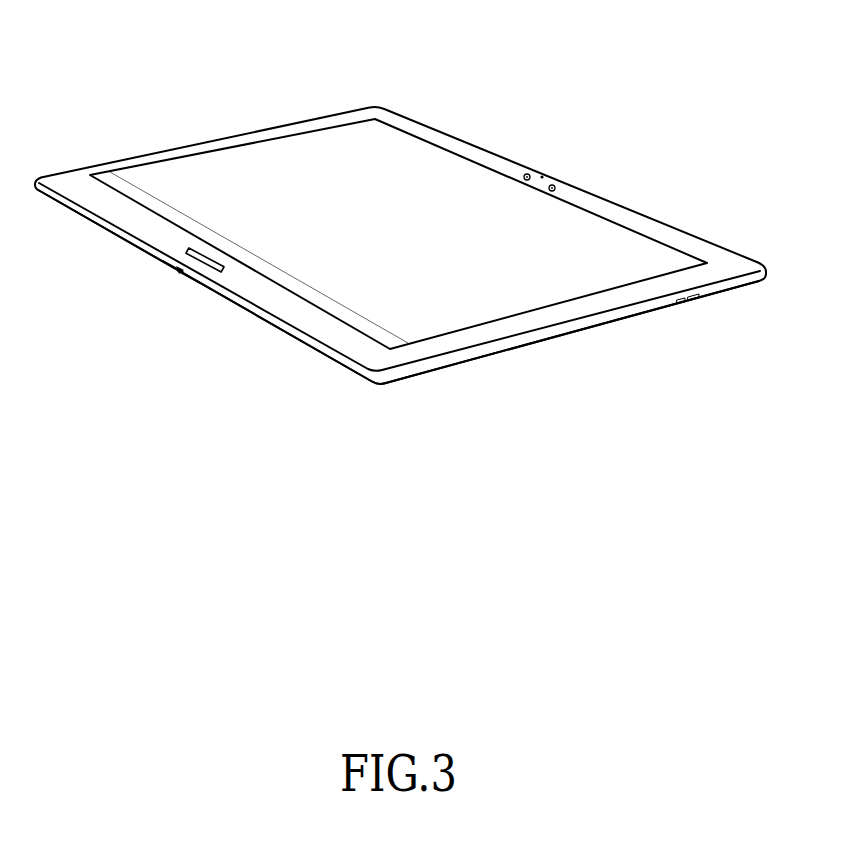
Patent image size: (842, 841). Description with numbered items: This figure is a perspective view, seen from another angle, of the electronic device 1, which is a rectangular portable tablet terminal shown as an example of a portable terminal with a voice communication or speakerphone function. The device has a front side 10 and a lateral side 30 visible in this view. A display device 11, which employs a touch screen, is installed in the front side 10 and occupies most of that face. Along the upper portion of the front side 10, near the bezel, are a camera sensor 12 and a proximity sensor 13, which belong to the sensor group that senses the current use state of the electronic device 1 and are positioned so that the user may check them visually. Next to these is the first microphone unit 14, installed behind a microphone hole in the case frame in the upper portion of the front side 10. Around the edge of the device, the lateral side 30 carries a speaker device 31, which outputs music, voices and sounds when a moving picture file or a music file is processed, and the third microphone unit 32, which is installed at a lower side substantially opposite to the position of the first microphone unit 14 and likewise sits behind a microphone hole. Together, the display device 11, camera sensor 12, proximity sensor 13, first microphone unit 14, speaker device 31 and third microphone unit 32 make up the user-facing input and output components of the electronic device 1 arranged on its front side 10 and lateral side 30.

The electronic device 1 is at (73, 101).
The front side 10 is at (105, 201).
The display device 11 is at (275, 162).
The camera sensor 12 is at (527, 173).
The proximity sensor 13 is at (557, 186).
The first microphone unit 14 is at (544, 174).
The lateral side 30 is at (273, 322).
The speaker device 31 is at (692, 300).
The third microphone unit 32 is at (181, 268).